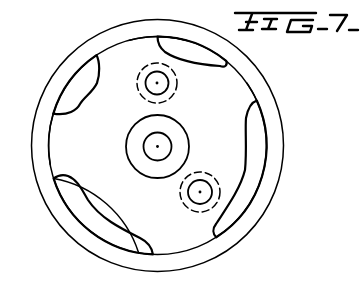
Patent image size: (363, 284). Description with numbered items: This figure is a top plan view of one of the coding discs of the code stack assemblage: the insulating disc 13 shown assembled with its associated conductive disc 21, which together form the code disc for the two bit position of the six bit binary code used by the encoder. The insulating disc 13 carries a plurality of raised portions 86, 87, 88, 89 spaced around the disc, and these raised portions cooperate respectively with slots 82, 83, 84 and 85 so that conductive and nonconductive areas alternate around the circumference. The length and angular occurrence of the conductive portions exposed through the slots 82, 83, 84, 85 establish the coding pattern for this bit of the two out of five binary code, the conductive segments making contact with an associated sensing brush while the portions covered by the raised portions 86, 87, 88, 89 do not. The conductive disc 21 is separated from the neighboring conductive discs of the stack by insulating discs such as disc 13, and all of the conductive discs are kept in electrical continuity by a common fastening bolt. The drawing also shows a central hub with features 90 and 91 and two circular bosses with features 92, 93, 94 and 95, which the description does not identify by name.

The insulating disc 13 is at (62, 67).
The conductive disc 21 is at (157, 208).
The slot 82 is at (200, 66).
The slot 83 is at (247, 153).
The slot 84 is at (84, 200).
The slot 85 is at (84, 96).
The raised portion 86 is at (213, 52).
The raised portion 87 is at (258, 146).
The raised portion 88 is at (88, 218).
The raised portion 89 is at (70, 97).
The central bore 90 is at (147, 145).
The hub 91 is at (130, 159).
The pin boss 92 is at (193, 199).
The pin boss phantom circle 93 is at (203, 212).
The pin boss 94 is at (150, 78).
The pin boss phantom circle 95 is at (175, 93).